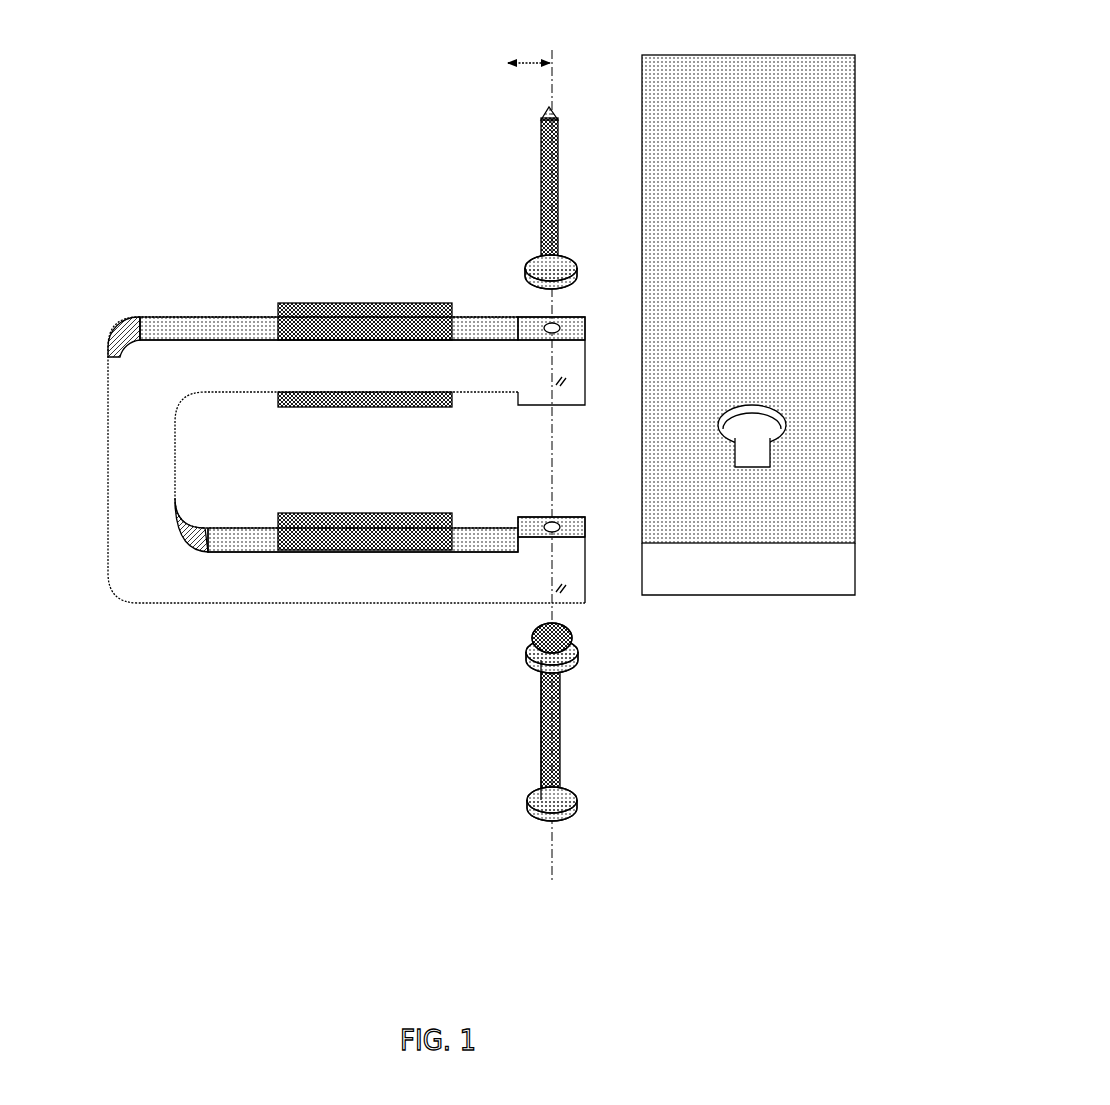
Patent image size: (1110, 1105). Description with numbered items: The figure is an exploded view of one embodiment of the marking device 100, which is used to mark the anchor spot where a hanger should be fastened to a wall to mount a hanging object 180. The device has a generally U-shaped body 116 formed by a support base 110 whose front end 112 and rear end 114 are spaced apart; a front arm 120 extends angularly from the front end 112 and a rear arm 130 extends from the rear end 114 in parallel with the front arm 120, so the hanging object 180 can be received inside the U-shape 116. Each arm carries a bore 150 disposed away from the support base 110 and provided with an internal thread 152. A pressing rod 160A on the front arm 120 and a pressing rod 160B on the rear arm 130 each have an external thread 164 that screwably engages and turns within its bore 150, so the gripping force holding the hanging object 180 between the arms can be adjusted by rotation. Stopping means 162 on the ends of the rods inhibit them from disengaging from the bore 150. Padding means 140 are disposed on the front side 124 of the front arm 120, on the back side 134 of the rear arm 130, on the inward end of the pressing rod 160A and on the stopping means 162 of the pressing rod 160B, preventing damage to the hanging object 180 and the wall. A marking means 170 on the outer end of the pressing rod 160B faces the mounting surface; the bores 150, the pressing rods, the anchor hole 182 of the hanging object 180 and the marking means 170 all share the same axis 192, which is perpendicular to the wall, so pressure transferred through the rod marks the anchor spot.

The device 100 is at (228, 98).
The support base 110 is at (328, 453).
The front end 112 is at (313, 567).
The rear end 114 is at (323, 309).
The U-shaped body 116 is at (346, 460).
The front arm 120 is at (579, 546).
The front side 124 is at (469, 533).
The rear arm 130 is at (579, 367).
The back side 134 is at (511, 316).
The padding means 140 is at (321, 303).
The bore 150 is at (560, 330).
The internal thread 152 is at (551, 520).
The pressing rod 160A is at (527, 741).
The pressing rod 160B is at (524, 468).
The stopping means 162 is at (527, 257).
The external thread 164 is at (550, 196).
The marking means 170 is at (553, 115).
The hanging object 180 is at (748, 342).
The anchor hole 182 is at (766, 413).
The axis 192 is at (495, 68).